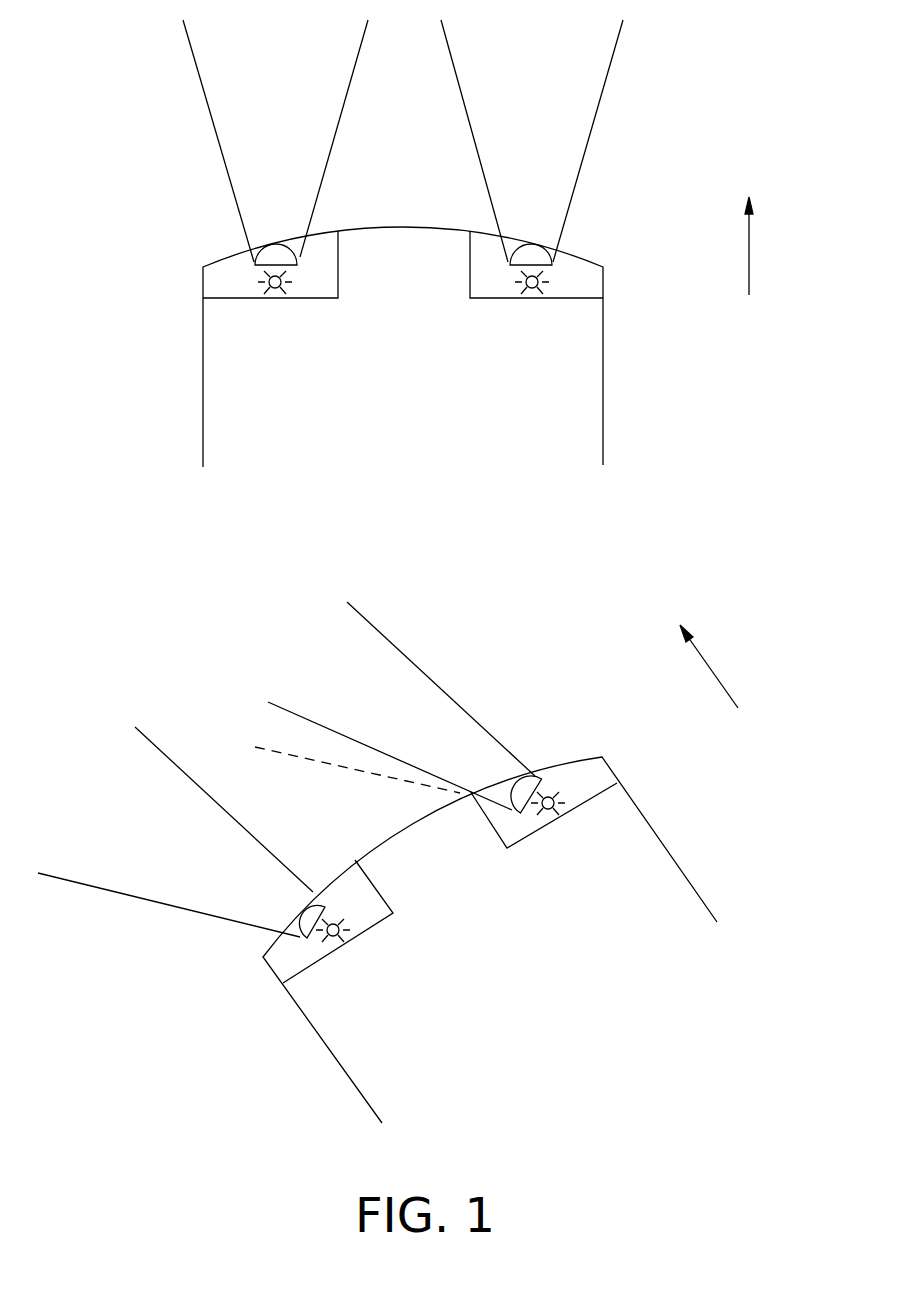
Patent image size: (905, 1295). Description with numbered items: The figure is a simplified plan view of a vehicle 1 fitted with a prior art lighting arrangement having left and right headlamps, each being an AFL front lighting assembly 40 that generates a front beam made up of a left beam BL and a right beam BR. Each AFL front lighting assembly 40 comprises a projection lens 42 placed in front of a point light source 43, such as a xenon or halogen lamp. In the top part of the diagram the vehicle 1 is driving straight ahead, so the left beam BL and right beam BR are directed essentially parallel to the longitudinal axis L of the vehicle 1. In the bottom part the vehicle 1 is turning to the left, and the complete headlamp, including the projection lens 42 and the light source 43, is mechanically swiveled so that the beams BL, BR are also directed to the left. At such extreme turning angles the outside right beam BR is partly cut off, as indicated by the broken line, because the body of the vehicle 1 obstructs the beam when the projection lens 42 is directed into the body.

The vehicle 1 is at (590, 430).
The AFL front lighting assembly 40 is at (225, 262).
The projection lens 42 is at (276, 245).
The point light source 43 is at (273, 290).
The left beam BL is at (72, 925).
The right beam BR is at (586, 85).
The longitudinal axis L is at (749, 253).